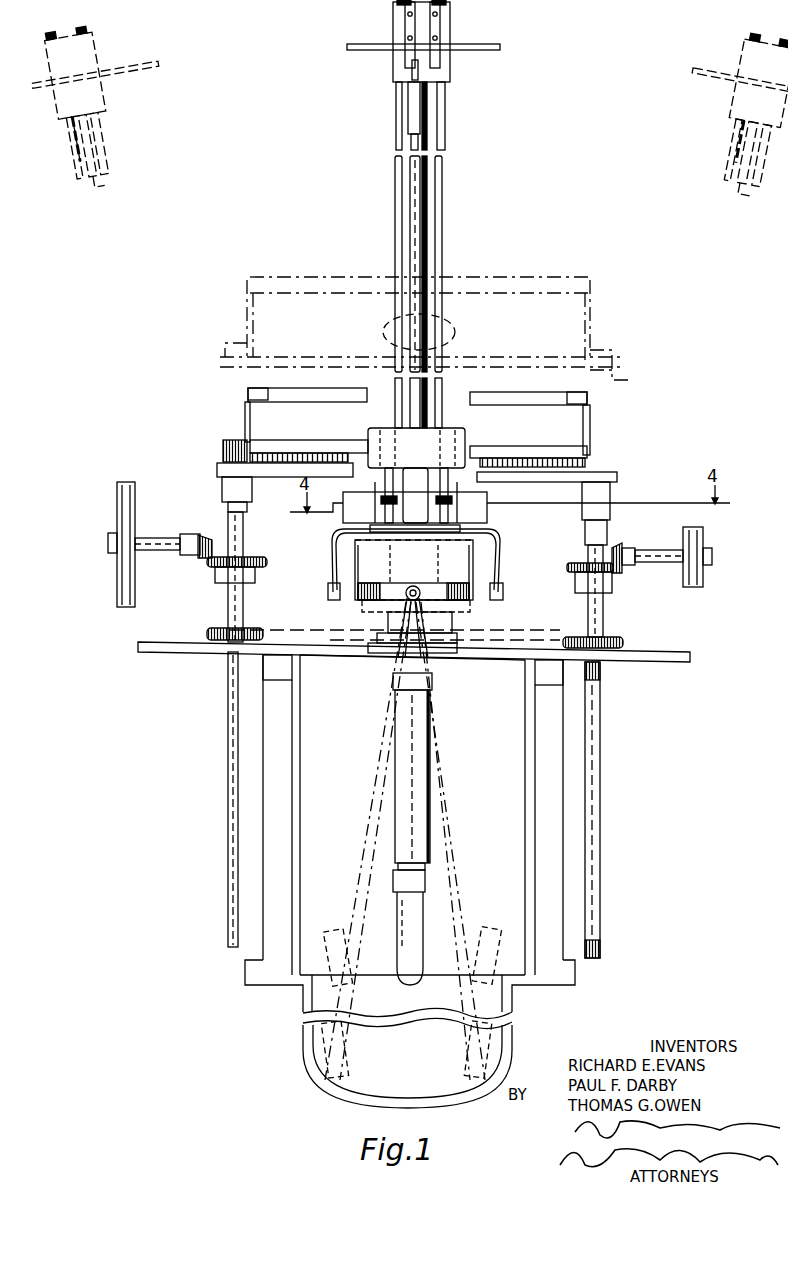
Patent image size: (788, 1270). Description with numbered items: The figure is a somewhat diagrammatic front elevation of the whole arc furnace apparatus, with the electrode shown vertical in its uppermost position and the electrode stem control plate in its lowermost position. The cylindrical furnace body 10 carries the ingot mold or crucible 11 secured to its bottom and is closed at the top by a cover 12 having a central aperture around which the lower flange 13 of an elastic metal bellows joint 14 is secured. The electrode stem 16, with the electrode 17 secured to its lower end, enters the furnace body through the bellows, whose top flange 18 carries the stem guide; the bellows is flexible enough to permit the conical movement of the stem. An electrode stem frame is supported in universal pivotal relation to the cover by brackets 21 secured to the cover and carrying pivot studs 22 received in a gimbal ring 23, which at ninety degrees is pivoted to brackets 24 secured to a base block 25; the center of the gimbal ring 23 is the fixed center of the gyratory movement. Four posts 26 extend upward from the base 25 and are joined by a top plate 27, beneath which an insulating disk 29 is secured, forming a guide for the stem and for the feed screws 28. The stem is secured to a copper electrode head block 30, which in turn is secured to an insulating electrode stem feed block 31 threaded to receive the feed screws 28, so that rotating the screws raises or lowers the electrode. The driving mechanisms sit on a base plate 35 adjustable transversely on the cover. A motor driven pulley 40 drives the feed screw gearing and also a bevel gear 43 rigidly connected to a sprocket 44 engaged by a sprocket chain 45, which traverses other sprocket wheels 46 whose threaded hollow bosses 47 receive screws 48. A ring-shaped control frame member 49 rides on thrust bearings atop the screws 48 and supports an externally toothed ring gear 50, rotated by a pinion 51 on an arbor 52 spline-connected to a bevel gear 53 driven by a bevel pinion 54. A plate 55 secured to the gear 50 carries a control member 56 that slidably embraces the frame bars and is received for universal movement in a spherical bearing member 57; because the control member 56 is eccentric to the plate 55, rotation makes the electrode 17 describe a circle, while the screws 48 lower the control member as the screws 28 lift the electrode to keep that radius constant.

The furnace body 10 is at (528, 835).
The ingot mold or crucible 11 is at (515, 1018).
The cover 12 is at (560, 670).
The lower flange 13 is at (458, 652).
The elastic metal bellows joint 14 is at (362, 605).
The electrode stem 16 is at (430, 230).
The electrode 17 is at (330, 932).
The top flange 18 is at (500, 537).
The brackets 21 is at (424, 620).
The pivot studs 22 is at (416, 586).
The gimbal ring 23 is at (370, 583).
The brackets 24 is at (332, 565).
The base block 25 is at (478, 522).
The posts 26 is at (433, 22).
The top plate 27 is at (445, 28).
The electrode stem feed screws 28 is at (397, 300).
The insulating disk 29 is at (490, 47).
The electrode head block 30 is at (428, 100).
The electrode stem feed block 31 is at (445, 72).
The base plate 35 is at (688, 662).
The motor driven pulley 40 is at (692, 587).
The bevel gear 43 is at (618, 573).
The sprocket 44 is at (623, 642).
The sprocket chain 45 is at (480, 631).
The sprocket wheels 46 is at (207, 632).
The threaded hollow boss 47 is at (578, 585).
The screws 48 is at (600, 700).
The ring-shaped control frame member 49 is at (620, 355).
The externally toothed ring shaped gear 50 is at (310, 455).
The pinion 51 is at (230, 440).
The arbor 52 is at (228, 770).
The bevel gear 53 is at (258, 560).
The bevel pinion 54 is at (205, 535).
The plate 55 is at (255, 440).
The control member 56 is at (455, 340).
The bearing member 57 is at (386, 430).